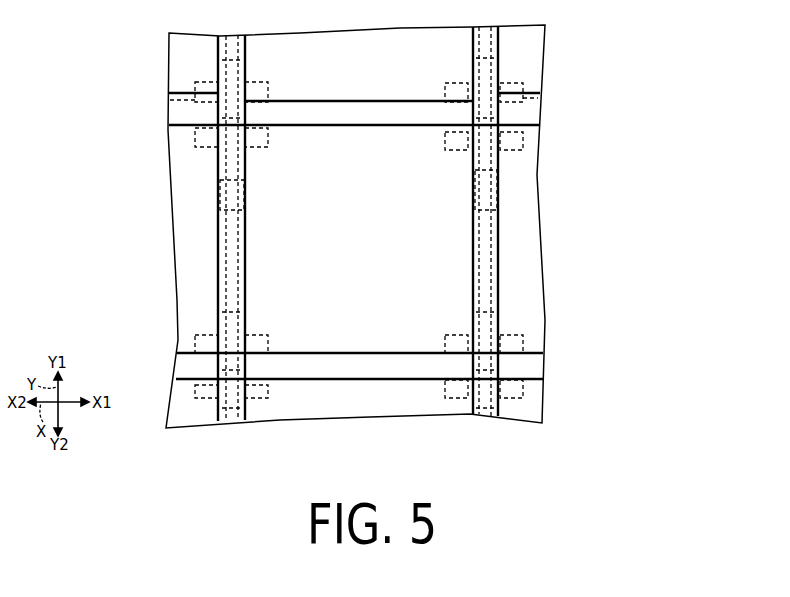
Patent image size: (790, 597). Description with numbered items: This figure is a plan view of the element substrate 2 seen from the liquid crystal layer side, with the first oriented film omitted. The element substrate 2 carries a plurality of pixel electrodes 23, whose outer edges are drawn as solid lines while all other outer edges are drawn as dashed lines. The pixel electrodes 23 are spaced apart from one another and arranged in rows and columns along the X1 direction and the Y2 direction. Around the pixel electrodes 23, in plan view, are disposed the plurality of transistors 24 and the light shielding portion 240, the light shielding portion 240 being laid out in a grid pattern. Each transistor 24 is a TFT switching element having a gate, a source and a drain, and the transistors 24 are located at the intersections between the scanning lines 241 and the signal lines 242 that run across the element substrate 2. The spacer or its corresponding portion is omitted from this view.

The element substrate 2 is at (539, 51).
The pixel electrodes 23 is at (440, 127).
The transistors 24 is at (243, 58).
The light shielding portion 240 is at (217, 172).
The scanning lines 241 is at (336, 380).
The signal lines 242 is at (218, 227).